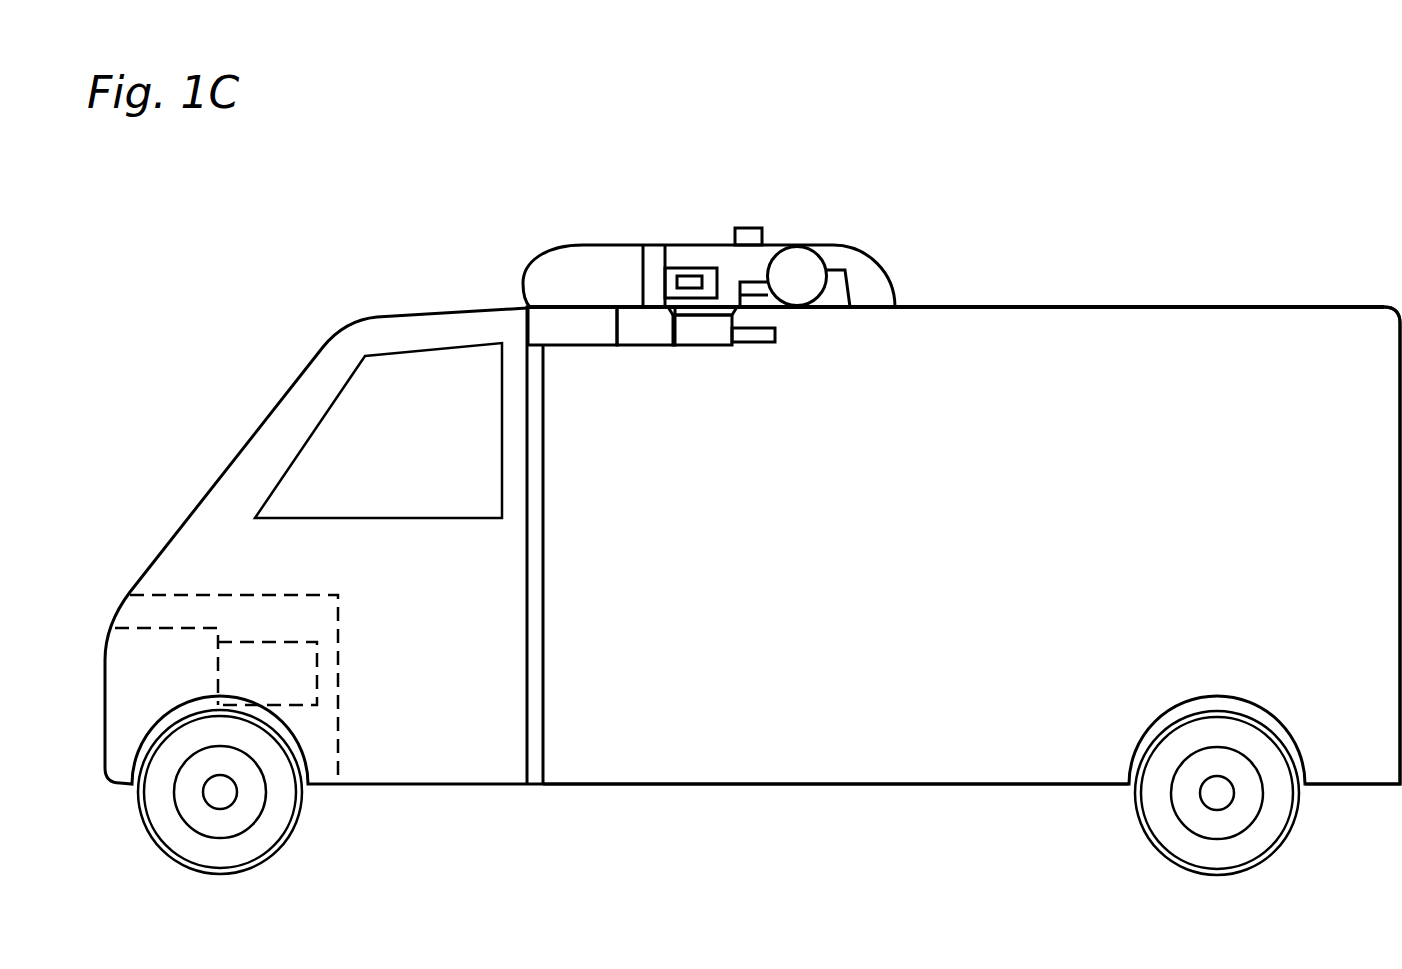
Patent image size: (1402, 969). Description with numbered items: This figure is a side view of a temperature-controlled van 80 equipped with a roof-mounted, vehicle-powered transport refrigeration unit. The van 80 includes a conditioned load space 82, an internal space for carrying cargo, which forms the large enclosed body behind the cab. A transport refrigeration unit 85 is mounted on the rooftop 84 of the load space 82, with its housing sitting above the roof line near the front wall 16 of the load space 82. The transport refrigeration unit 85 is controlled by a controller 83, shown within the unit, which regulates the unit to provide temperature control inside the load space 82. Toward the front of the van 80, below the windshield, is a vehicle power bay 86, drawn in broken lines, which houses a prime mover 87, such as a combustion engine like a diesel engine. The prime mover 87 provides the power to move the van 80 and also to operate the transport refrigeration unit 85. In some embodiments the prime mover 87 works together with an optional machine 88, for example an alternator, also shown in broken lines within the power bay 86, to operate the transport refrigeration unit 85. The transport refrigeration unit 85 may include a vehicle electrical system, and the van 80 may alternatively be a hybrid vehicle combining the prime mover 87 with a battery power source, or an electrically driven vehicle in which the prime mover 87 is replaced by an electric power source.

The van 80 is at (260, 332).
The conditioned load space 82 is at (1268, 338).
The rooftop 84 is at (1082, 305).
The front wall 16 is at (628, 323).
The controller 83 is at (690, 270).
The transport refrigeration unit 85 is at (868, 257).
The vehicle power bay 86 is at (173, 593).
The prime mover 87 is at (138, 627).
The machine 88 is at (320, 690).